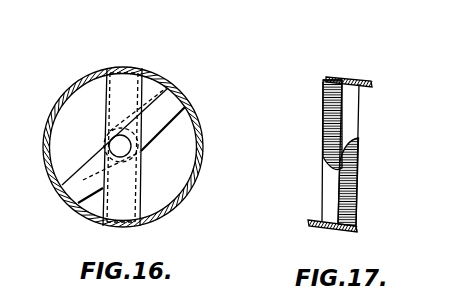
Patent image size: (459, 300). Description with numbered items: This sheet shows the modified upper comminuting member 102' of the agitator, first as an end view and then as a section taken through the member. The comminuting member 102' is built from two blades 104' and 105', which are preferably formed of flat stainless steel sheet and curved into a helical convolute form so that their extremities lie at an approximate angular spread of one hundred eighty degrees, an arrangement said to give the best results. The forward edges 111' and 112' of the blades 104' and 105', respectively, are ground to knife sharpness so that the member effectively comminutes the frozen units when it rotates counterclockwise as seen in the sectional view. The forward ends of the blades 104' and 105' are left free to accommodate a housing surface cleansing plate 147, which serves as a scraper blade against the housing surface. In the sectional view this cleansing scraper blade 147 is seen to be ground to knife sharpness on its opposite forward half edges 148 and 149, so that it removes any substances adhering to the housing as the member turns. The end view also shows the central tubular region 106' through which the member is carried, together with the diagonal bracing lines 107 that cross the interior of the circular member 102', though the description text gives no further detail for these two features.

In FIG. 16, the upper comminuting member 102' is at (130, 142).
In FIG. 17, the upper comminuting member 102' is at (373, 144).
In FIG. 16, the blade 104' is at (86, 90).
In FIG. 17, the blade 104' is at (310, 237).
In FIG. 16, the blade 105' is at (168, 193).
In FIG. 17, the blade 105' is at (370, 105).
In FIG. 16, the tubular channel 106' is at (136, 130).
In FIG. 16, the diagonal brace 107 is at (165, 108).
In FIG. 16, the housing surface cleansing plate 147 is at (108, 128).
In FIG. 17, the housing surface cleansing plate 147 is at (323, 102).
In FIG. 17, the forward half edge 148 is at (324, 110).
In FIG. 17, the forward half edge 149 is at (349, 184).
In FIG. 17, the forward edge 111' is at (322, 63).
In FIG. 17, the forward edge 112' is at (381, 222).